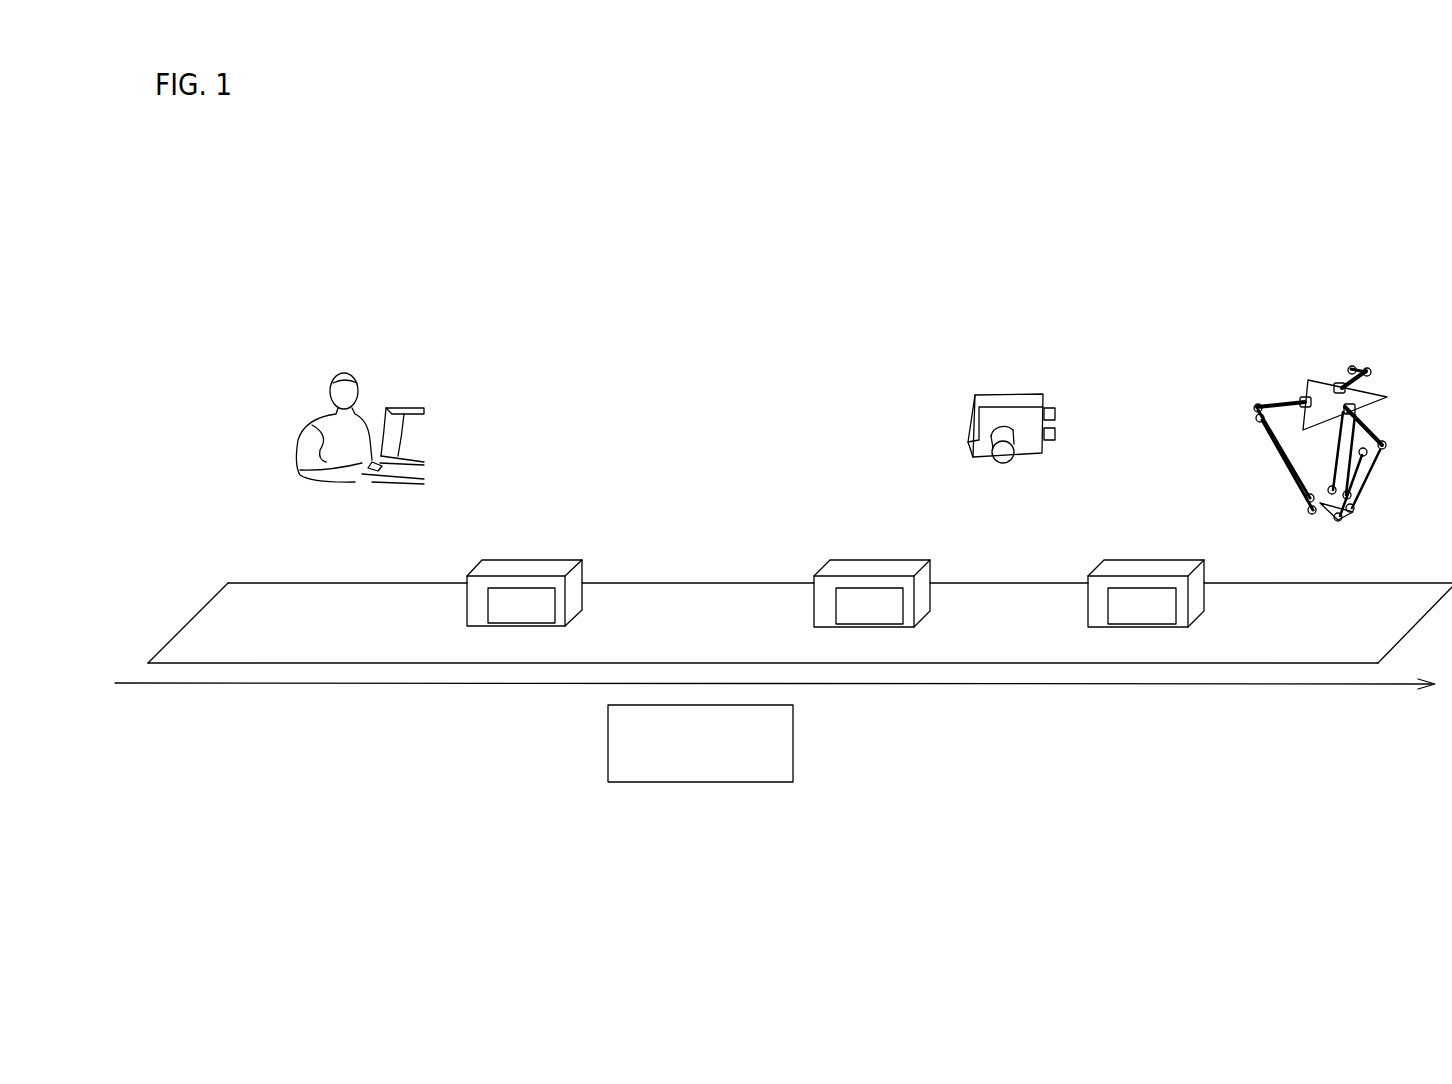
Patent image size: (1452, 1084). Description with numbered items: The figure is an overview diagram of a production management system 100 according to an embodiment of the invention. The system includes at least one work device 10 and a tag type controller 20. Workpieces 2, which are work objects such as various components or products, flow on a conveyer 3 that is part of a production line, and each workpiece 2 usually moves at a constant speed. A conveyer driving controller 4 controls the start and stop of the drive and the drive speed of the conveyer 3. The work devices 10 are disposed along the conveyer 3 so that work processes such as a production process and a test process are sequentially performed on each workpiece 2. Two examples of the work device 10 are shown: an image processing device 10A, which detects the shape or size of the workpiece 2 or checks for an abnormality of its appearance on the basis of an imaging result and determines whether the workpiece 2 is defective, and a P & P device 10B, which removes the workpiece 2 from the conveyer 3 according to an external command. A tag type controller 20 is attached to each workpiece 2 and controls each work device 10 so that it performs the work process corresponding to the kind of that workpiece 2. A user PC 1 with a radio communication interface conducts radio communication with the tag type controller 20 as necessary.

The production management system 100 is at (1201, 166).
The user PC 1 is at (412, 402).
The workpiece 2 is at (557, 568).
The tag type controller 20 is at (500, 608).
The conveyer 3 is at (195, 612).
The conveyer driving controller 4 is at (608, 762).
The work device 10 is at (1167, 389).
The image processing device 10A is at (1007, 392).
The P & P device 10B is at (1318, 373).